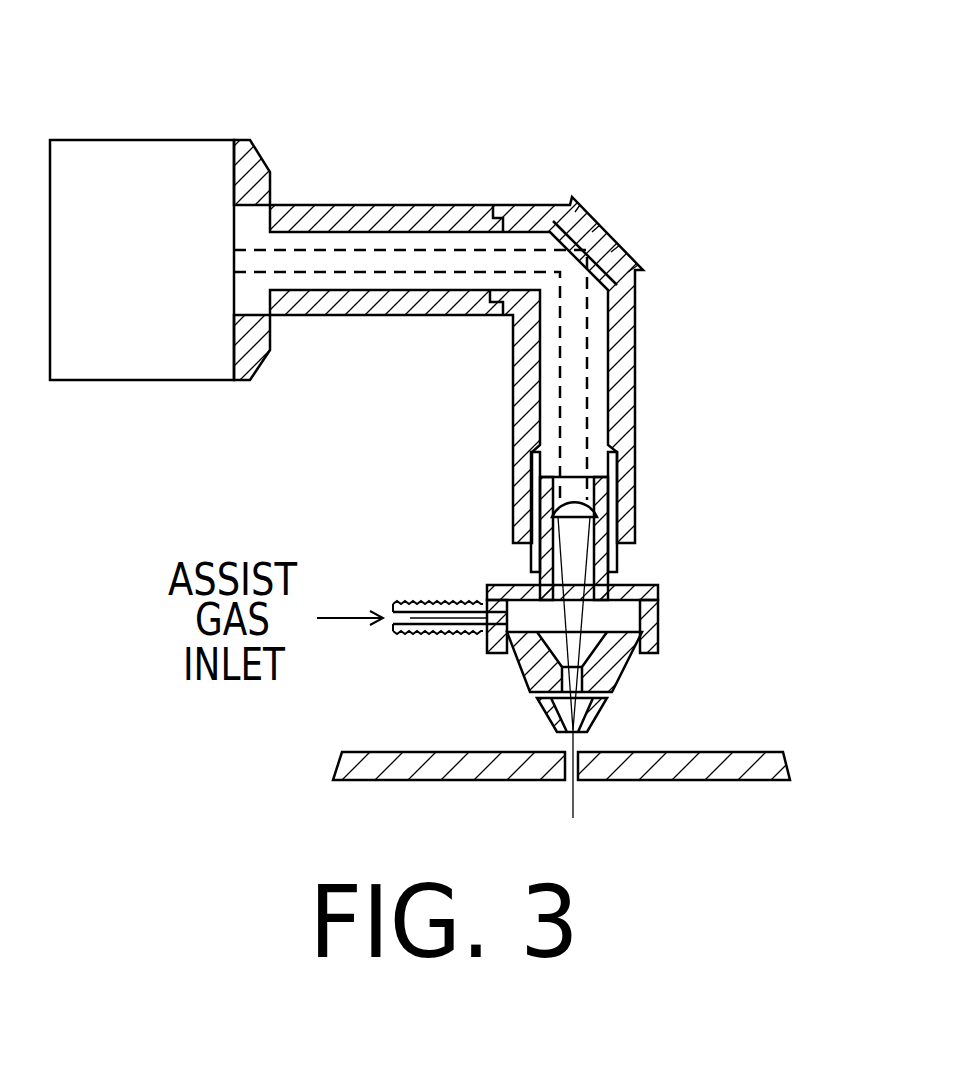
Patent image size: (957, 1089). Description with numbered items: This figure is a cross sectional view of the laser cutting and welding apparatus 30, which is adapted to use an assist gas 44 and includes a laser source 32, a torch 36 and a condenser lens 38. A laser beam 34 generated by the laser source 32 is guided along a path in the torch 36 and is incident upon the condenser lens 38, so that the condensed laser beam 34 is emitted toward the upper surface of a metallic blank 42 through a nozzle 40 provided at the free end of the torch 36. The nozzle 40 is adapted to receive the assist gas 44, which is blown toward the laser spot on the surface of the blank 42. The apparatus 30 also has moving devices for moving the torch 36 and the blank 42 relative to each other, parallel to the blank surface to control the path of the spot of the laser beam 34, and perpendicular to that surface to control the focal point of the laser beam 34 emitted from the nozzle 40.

The laser cutting and welding apparatus 30 is at (695, 160).
The laser source 32 is at (153, 157).
The laser beam 34 is at (408, 262).
The torch 36 is at (405, 215).
The condenser lens 38 is at (585, 517).
The nozzle 40 is at (592, 718).
The metallic blank 42 is at (738, 762).
The assist gas 44 is at (522, 625).